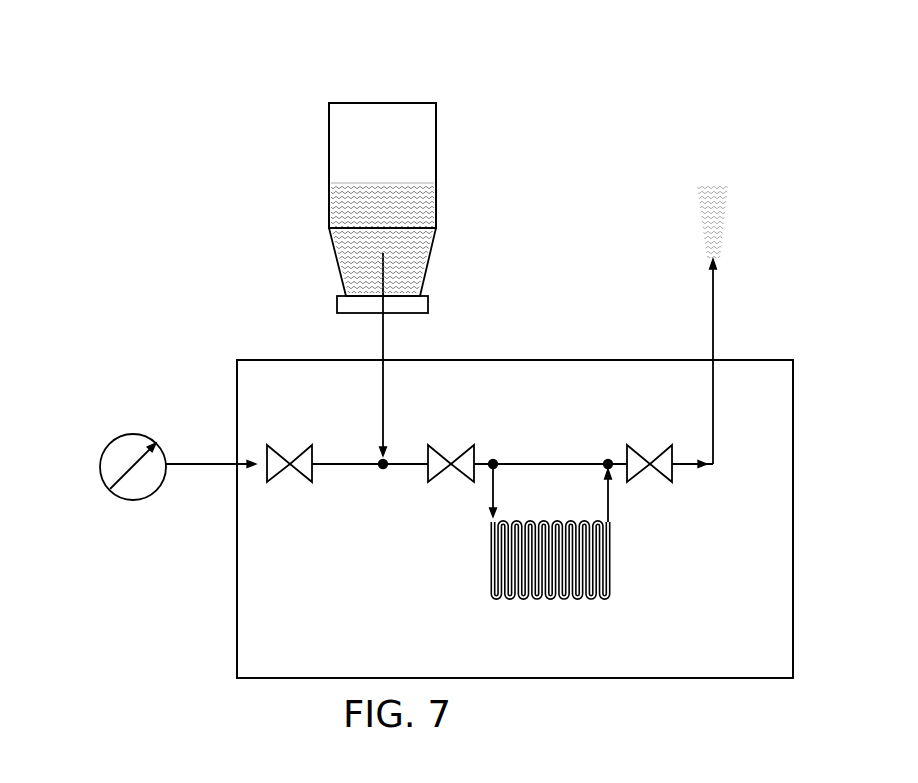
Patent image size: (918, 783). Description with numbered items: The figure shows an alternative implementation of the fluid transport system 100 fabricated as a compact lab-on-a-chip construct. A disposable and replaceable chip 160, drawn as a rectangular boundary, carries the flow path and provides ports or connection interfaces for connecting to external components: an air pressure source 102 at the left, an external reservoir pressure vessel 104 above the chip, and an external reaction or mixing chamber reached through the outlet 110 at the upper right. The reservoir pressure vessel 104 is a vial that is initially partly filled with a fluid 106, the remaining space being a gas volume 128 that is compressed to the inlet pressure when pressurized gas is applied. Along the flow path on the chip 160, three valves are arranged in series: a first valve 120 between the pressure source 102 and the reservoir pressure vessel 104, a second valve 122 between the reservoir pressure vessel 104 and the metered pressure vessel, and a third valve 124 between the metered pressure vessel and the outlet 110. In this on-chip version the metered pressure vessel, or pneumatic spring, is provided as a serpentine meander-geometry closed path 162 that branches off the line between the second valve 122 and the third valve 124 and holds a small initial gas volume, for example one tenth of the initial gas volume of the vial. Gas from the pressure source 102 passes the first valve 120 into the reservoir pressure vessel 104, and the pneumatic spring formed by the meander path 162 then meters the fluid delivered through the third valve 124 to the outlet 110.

The fluid transport system 100 is at (292, 60).
The air pressure source 102 is at (100, 467).
The reservoir pressure vessel 104 is at (329, 116).
The fluid 106 is at (329, 205).
The gas volume 128 is at (416, 142).
The fluid outlet 110 is at (738, 304).
The first valve 120 is at (291, 482).
The second valve 122 is at (443, 445).
The third valve 124 is at (657, 482).
The chip 160 is at (742, 620).
The meander-geometry closed path 162 is at (565, 606).